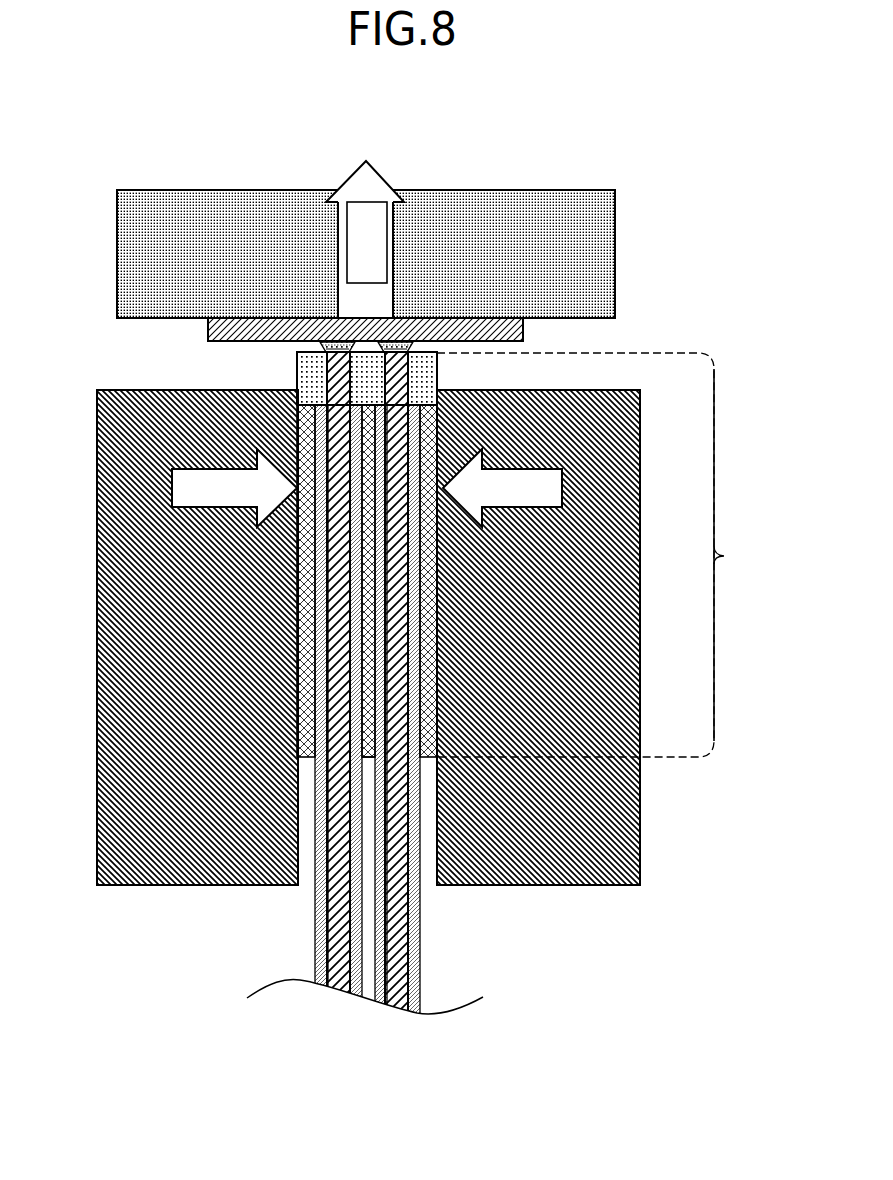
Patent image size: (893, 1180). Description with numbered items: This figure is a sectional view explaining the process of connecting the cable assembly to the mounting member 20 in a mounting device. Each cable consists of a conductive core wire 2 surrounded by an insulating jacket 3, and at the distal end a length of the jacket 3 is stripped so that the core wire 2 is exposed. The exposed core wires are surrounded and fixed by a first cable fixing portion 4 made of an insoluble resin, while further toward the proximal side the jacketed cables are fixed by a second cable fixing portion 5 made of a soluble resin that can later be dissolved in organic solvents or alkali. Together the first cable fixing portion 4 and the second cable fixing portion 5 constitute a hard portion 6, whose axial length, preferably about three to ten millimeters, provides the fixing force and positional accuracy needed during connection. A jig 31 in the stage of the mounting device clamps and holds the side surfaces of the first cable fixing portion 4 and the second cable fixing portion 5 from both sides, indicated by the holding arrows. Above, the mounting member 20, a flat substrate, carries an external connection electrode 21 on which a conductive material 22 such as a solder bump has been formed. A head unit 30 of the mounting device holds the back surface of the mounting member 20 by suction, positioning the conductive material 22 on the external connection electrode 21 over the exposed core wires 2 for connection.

The core wire 2 is at (340, 903).
The jacket 3 is at (328, 930).
The first cable fixing portion 4 is at (297, 377).
The second cable fixing portion 5 is at (298, 758).
The hard portion 6 is at (522, 555).
The mounting member 20 is at (523, 330).
The external connection electrode 21 is at (322, 342).
The conductive material 22 is at (320, 351).
The head unit 30 is at (615, 250).
The jig 31 is at (640, 840).